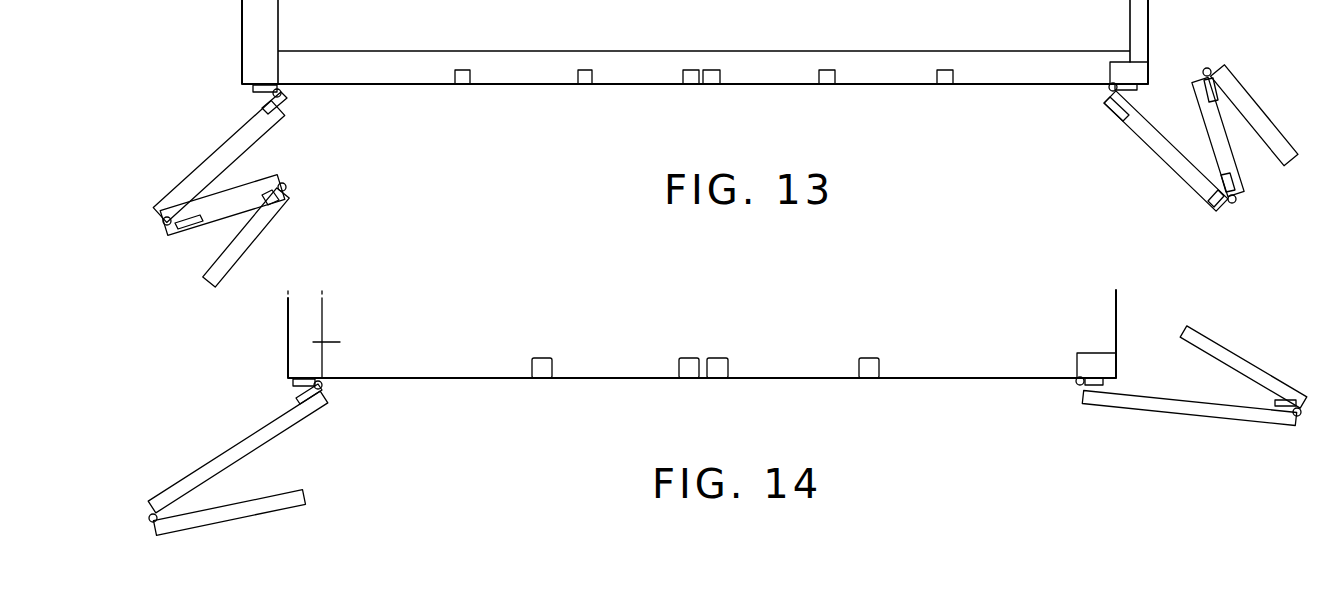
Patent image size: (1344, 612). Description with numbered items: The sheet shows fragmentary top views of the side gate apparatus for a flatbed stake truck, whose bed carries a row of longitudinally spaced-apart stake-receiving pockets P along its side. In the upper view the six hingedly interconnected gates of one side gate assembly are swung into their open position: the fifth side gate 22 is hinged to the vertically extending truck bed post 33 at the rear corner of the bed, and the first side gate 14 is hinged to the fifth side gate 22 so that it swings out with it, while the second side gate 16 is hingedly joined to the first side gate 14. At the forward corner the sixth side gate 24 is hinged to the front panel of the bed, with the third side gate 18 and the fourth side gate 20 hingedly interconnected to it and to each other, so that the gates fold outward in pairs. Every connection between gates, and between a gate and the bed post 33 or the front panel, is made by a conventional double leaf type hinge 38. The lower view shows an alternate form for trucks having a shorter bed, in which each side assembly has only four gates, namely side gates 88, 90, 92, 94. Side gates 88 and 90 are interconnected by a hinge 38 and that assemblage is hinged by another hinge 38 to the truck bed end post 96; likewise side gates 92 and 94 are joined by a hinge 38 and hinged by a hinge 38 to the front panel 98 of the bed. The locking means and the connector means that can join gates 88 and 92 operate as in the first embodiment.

In FIG. 13, the first side gate 14 is at (1225, 145).
In FIG. 13, the second side gate 16 is at (1265, 116).
In FIG. 13, the third side gate 18 is at (250, 182).
In FIG. 13, the fourth side gate 20 is at (263, 230).
In FIG. 13, the fifth side gate 22 is at (1160, 152).
In FIG. 13, the sixth side gate 24 is at (200, 166).
In FIG. 13, the truck bed post 33 is at (1116, 70).
In FIG. 13, the double leaf type hinge 38 is at (283, 95).
In FIG. 14, the double leaf type hinge 38 is at (325, 390).
In FIG. 14, the side gate 88 is at (1238, 358).
In FIG. 14, the side gate 90 is at (1170, 416).
In FIG. 14, the side gate 92 is at (262, 496).
In FIG. 14, the side gate 94 is at (218, 450).
In FIG. 14, the truck bed end post 96 is at (1080, 362).
In FIG. 14, the front panel 98 is at (345, 345).
In FIG. 13, the stake-receiving pockets P is at (584, 80).
In FIG. 14, the stake-receiving pockets P is at (542, 368).